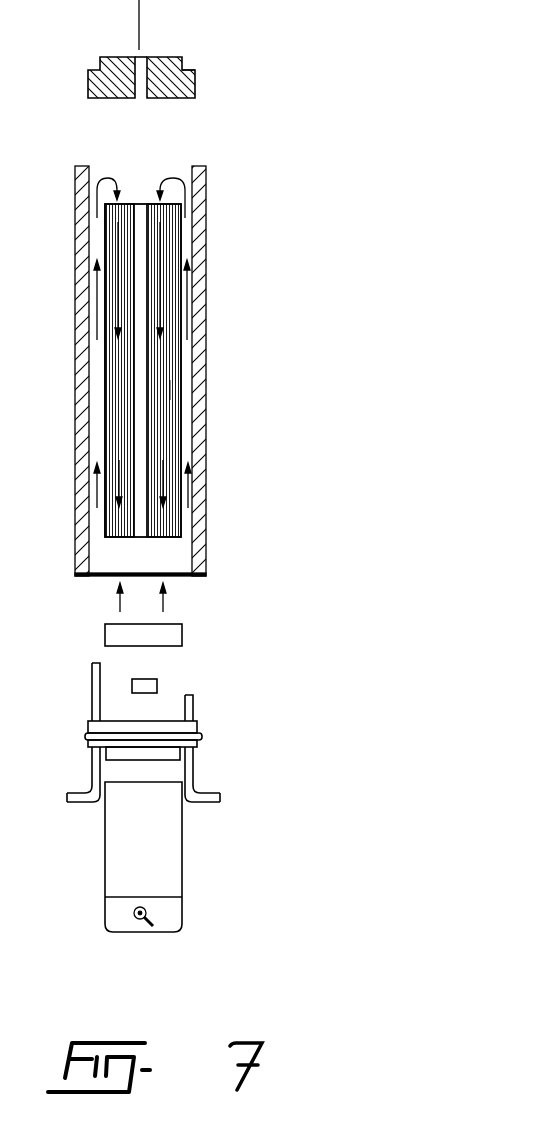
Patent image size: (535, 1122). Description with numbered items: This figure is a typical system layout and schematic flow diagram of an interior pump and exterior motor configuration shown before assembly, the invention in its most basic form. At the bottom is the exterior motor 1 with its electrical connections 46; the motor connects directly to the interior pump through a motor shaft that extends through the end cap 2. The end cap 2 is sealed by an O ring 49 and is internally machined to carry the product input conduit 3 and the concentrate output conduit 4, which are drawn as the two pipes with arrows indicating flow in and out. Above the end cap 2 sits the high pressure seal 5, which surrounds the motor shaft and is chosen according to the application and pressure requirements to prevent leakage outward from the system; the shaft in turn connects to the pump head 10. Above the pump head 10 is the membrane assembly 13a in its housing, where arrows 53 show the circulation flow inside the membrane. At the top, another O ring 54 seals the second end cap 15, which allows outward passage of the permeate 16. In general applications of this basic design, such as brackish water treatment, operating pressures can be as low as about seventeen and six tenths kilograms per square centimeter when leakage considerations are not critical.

The motor 1 is at (182, 851).
The end cap 2 is at (88, 742).
The product input conduit 3 is at (58, 797).
The concentrate output conduit 4 is at (232, 797).
The high pressure seal 5 is at (157, 686).
The pump head 10 is at (182, 633).
The finned heat exchange tube 13a is at (139, 353).
The second end cap 15 is at (195, 70).
The permeate 16 is at (152, 25).
The electrical connections 46 is at (145, 938).
The O ring 49 is at (86, 736).
The arrows 53 is at (173, 398).
The O ring 54 is at (196, 80).